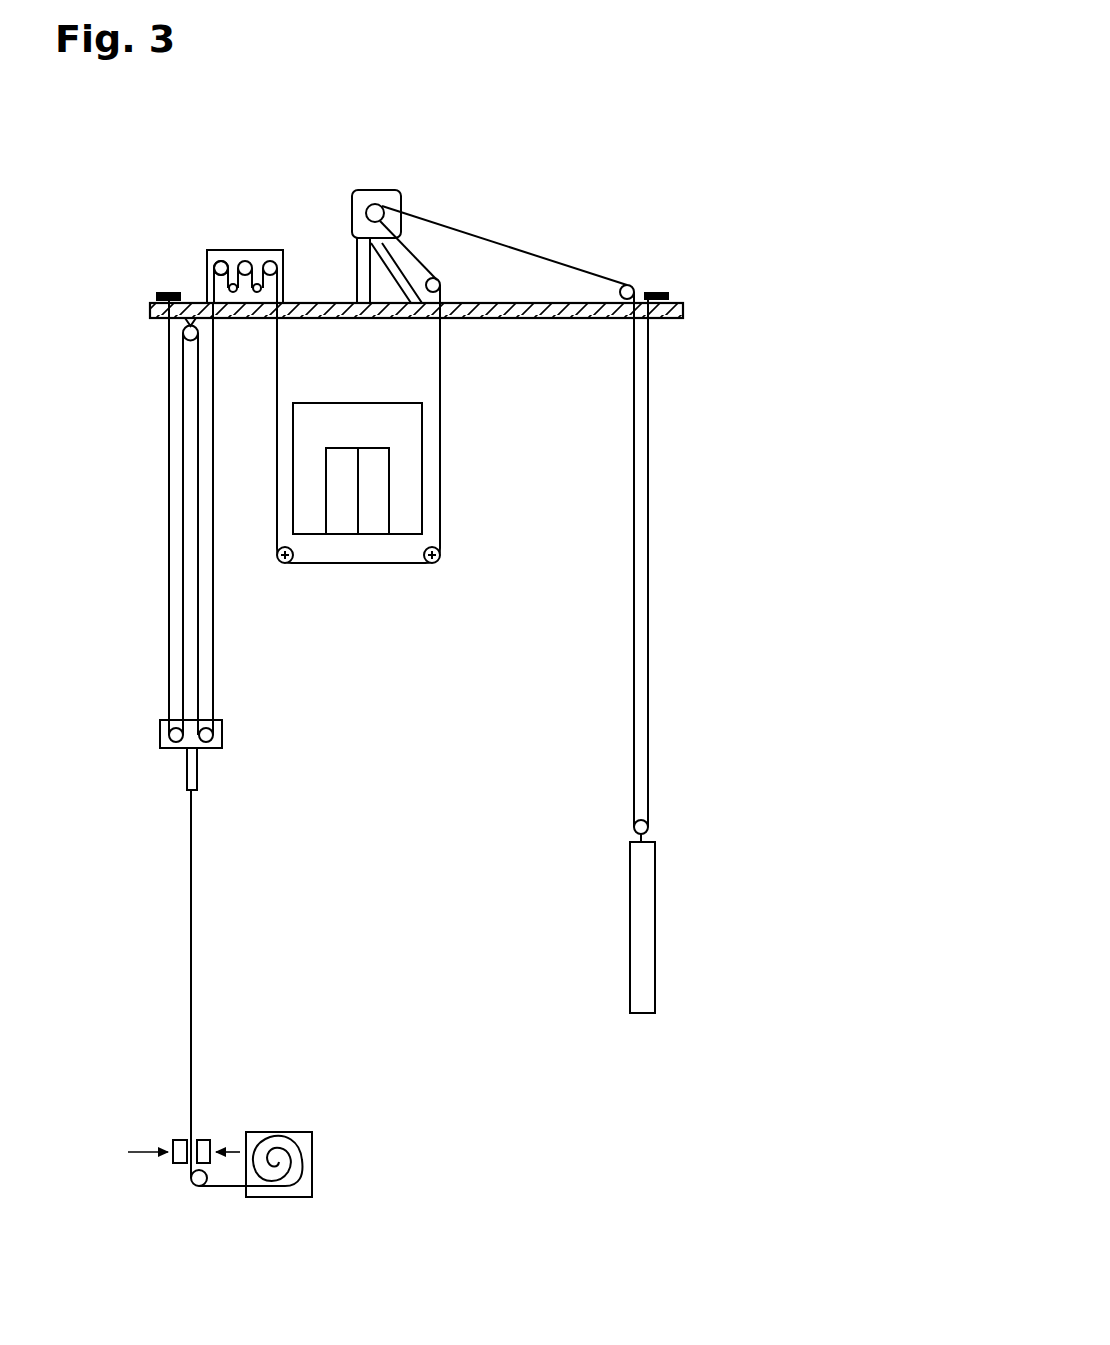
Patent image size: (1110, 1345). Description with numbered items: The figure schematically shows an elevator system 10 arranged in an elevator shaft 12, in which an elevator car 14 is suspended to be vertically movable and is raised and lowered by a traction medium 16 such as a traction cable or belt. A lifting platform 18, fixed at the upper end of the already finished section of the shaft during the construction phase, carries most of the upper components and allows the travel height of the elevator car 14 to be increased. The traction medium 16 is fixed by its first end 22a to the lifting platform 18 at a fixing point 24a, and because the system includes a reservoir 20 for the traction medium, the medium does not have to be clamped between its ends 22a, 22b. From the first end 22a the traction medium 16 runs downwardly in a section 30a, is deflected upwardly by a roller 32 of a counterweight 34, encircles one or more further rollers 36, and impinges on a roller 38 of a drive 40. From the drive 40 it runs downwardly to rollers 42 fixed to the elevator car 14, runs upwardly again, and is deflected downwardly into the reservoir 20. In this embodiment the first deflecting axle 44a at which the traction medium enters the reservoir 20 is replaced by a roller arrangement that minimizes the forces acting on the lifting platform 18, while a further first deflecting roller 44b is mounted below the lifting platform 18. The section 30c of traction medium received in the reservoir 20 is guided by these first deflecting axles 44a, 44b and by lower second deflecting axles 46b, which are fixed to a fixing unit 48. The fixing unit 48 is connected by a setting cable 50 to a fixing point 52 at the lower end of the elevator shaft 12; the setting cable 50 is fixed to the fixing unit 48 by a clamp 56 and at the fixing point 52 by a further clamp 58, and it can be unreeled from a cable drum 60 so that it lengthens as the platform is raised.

The elevator system 10 is at (732, 98).
The elevator shaft 12 is at (442, 886).
The elevator car 14 is at (410, 470).
The traction medium 16 is at (657, 471).
The lifting platform 18 is at (684, 310).
The reservoir 20 is at (259, 677).
The first end 22a is at (679, 344).
The second end 22b is at (162, 272).
The fixing point 24a is at (157, 297).
The section 30a is at (496, 552).
The section 30c is at (103, 566).
The roller 32 is at (651, 829).
The counterweight 34 is at (656, 926).
The further roller 36 is at (628, 284).
The roller 38 is at (376, 204).
The drive 40 is at (352, 210).
The rollers 42 is at (285, 566).
The first deflecting axle 44a is at (221, 261).
The first deflecting axle 44b is at (183, 334).
The second deflecting axle 46b is at (161, 748).
The fixing unit 48 is at (160, 735).
The setting cable 50 is at (193, 945).
The fixing point 52 is at (208, 1108).
The clamp 56 is at (187, 775).
The further clamp 58 is at (181, 1164).
The cable drum 60 is at (256, 1198).